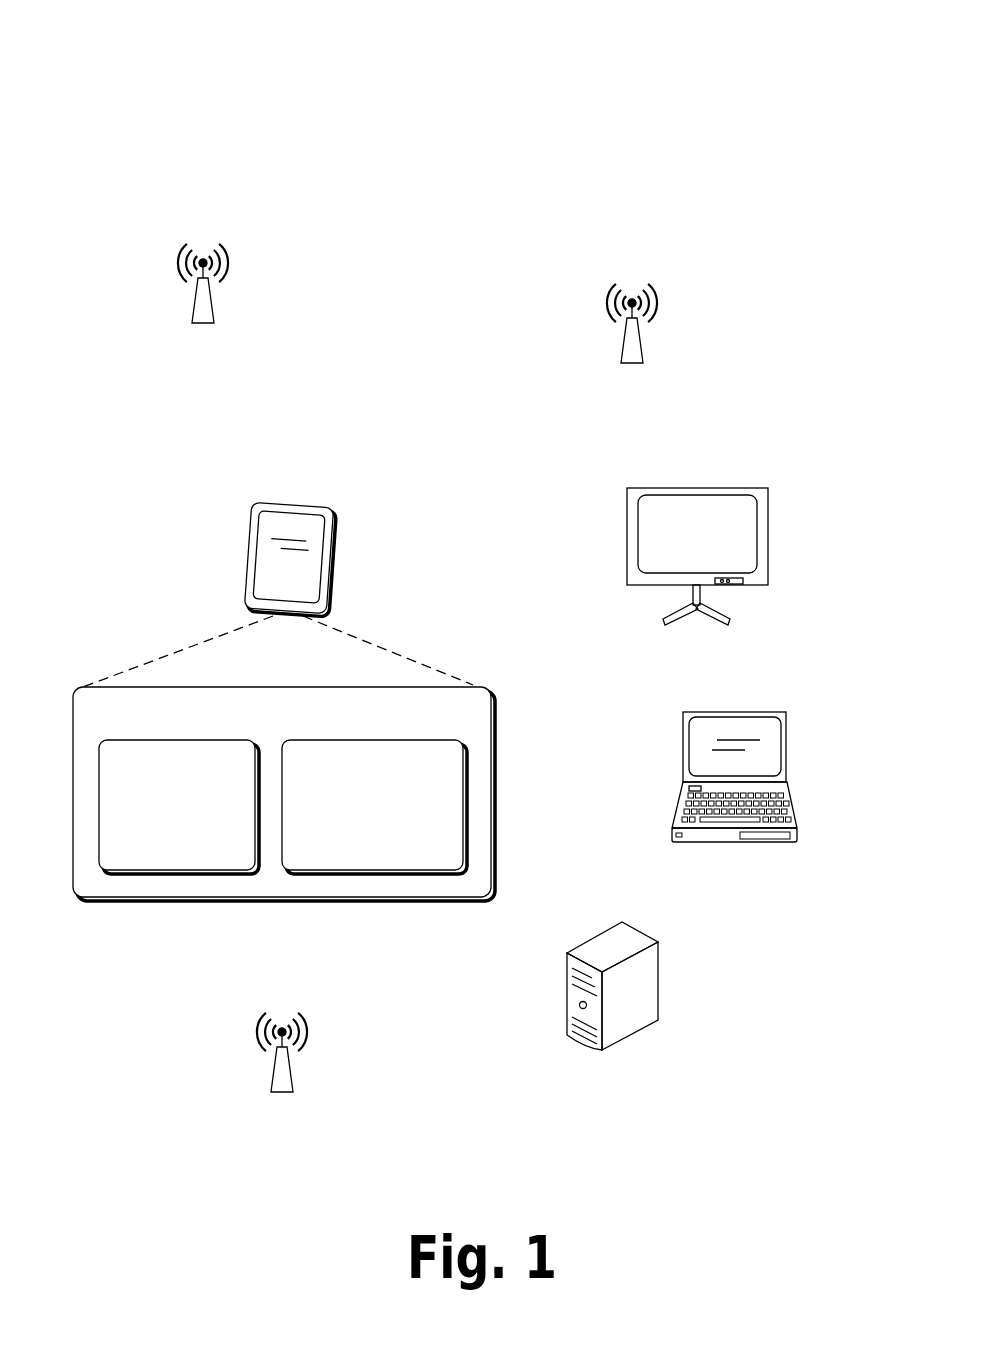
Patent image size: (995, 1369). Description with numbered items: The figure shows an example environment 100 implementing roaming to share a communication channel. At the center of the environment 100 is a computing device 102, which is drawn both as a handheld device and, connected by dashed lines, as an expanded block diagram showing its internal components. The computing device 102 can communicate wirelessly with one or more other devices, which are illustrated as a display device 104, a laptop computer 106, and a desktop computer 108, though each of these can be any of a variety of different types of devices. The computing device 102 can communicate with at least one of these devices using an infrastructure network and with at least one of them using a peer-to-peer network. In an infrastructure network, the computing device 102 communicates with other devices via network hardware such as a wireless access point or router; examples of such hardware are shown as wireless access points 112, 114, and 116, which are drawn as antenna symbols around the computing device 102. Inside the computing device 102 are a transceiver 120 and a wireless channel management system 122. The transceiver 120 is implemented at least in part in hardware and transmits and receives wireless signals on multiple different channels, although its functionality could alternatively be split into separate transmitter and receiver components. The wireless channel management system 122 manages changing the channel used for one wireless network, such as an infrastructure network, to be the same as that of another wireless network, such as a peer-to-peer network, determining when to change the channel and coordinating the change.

The environment 100 is at (78, 35).
The computing device 102 is at (293, 503).
The display device 104 is at (683, 488).
The laptop computer 106 is at (748, 712).
The desktop computer 108 is at (658, 970).
The wireless access point 112 is at (200, 323).
The wireless access point 114 is at (630, 362).
The wireless access point 116 is at (280, 1090).
The transceiver 120 is at (178, 870).
The wireless channel management system 122 is at (375, 870).